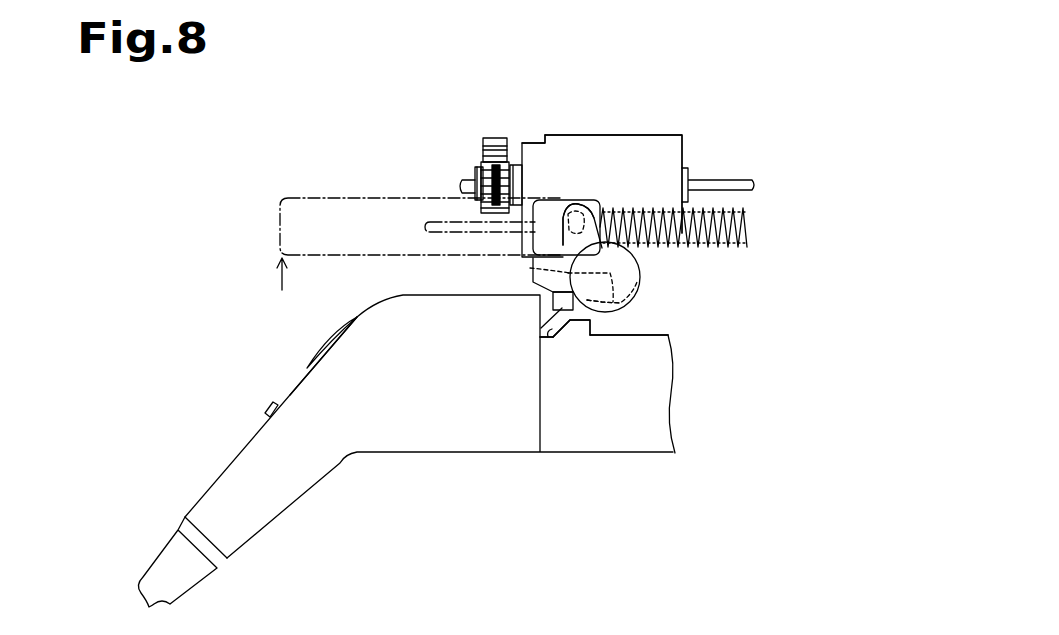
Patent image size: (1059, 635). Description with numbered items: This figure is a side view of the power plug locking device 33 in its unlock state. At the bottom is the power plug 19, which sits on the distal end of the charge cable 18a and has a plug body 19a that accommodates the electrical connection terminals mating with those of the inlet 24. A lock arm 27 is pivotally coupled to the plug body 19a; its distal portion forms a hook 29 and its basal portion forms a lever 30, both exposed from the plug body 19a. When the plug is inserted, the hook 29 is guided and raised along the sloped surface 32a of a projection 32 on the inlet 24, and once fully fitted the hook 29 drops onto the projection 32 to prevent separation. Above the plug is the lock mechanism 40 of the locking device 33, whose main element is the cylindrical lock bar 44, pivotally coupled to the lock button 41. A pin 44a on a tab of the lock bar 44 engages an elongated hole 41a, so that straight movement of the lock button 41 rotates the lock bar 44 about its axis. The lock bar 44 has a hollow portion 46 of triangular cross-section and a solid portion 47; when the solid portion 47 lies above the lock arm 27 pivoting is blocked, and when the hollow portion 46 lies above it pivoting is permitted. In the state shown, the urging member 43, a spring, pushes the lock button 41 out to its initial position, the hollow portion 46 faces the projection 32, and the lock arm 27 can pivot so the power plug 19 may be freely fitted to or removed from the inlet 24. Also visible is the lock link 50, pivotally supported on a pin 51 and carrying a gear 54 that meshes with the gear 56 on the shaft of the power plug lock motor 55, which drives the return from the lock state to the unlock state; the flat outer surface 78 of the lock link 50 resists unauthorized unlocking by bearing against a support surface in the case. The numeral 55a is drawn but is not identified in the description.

The charge cable 18a is at (140, 587).
The power plug 19 is at (477, 452).
The plug body 19a is at (402, 450).
The inlet 24 is at (606, 452).
The lock arm 27 is at (543, 312).
The hook 29 is at (641, 264).
The lever 30 is at (327, 341).
The projection 32 is at (592, 323).
The sloped surface 32a is at (550, 336).
The locking device 33 is at (800, 124).
The lock mechanism 40 is at (706, 318).
The lock button 41 is at (297, 196).
The elongated hole 41a is at (575, 203).
The urging member 43 is at (733, 248).
The lock bar 44 is at (640, 278).
The pin 44a is at (586, 203).
The hollow portion 46 is at (533, 272).
The solid portion 47 is at (630, 305).
The lock link 50 is at (481, 142).
The pin 51 is at (462, 183).
The gear 54 is at (495, 137).
The power plug lock motor 55 is at (666, 134).
The motor bracket 55a is at (525, 165).
The gear 56 is at (500, 158).
The outer surface 78 is at (479, 160).